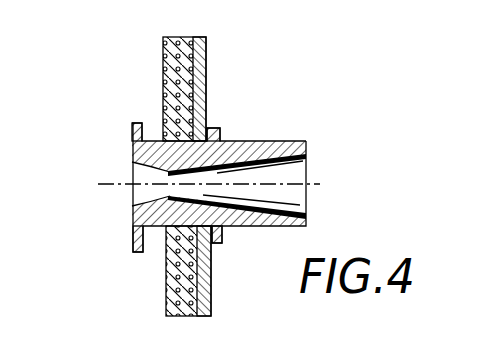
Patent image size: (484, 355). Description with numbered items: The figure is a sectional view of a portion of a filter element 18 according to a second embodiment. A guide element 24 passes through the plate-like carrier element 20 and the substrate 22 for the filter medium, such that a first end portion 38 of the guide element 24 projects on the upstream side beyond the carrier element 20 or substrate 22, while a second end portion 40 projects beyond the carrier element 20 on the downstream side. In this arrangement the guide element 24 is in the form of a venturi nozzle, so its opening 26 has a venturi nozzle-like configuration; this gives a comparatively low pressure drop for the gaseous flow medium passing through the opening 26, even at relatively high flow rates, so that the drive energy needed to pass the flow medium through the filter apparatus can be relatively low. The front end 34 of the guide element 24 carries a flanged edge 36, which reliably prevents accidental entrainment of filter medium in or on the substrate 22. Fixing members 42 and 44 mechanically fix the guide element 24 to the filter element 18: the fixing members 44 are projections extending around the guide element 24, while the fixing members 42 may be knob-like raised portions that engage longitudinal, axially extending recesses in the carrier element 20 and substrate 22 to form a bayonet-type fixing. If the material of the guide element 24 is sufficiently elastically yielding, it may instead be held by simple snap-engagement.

The filter element 18 is at (197, 158).
The plate-like carrier element 20 is at (209, 37).
The substrate 22 is at (163, 80).
The guide element 24 is at (269, 141).
The opening 26 is at (288, 174).
The front end 34 is at (133, 149).
The flanged edge 36 is at (132, 123).
The first end portion 38 is at (162, 228).
The second end portion 40 is at (255, 227).
The fixing member 42 is at (222, 128).
The fixing member 44 is at (163, 137).